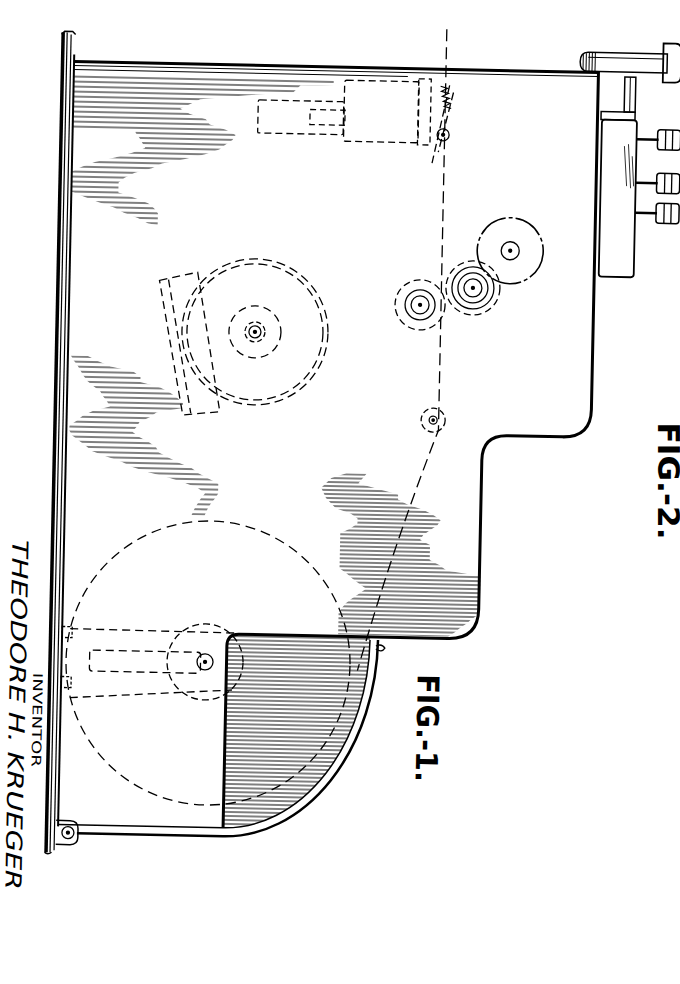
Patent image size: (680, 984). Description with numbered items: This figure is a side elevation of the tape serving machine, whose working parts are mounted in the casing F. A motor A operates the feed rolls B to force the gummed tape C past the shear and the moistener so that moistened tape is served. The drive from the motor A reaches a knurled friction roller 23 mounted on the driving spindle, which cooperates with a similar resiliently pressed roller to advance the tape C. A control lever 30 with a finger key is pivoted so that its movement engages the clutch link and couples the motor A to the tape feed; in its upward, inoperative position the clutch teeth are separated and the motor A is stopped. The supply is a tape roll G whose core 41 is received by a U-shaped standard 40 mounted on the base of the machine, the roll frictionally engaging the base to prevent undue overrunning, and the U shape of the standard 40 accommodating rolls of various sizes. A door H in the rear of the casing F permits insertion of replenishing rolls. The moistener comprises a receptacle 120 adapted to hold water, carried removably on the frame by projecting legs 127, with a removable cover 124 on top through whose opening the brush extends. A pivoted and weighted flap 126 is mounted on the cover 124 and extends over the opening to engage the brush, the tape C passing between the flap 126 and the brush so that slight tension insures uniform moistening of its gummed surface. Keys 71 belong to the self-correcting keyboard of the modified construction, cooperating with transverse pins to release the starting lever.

The control lever 30 is at (647, 70).
The keys 71 is at (643, 213).
The projecting legs 127 is at (315, 135).
The receptacle 120 is at (352, 141).
The pivoted and weighted flap 126 is at (441, 101).
The removable cover 124 is at (434, 148).
The tape C is at (437, 230).
The feed rolls B is at (436, 283).
The knurled friction roller 23 is at (470, 312).
The motor A is at (289, 394).
The tape roll G is at (286, 544).
The core 41 is at (204, 659).
The U-shaped standard 40 is at (155, 696).
The door H is at (308, 811).
The casing F is at (473, 490).